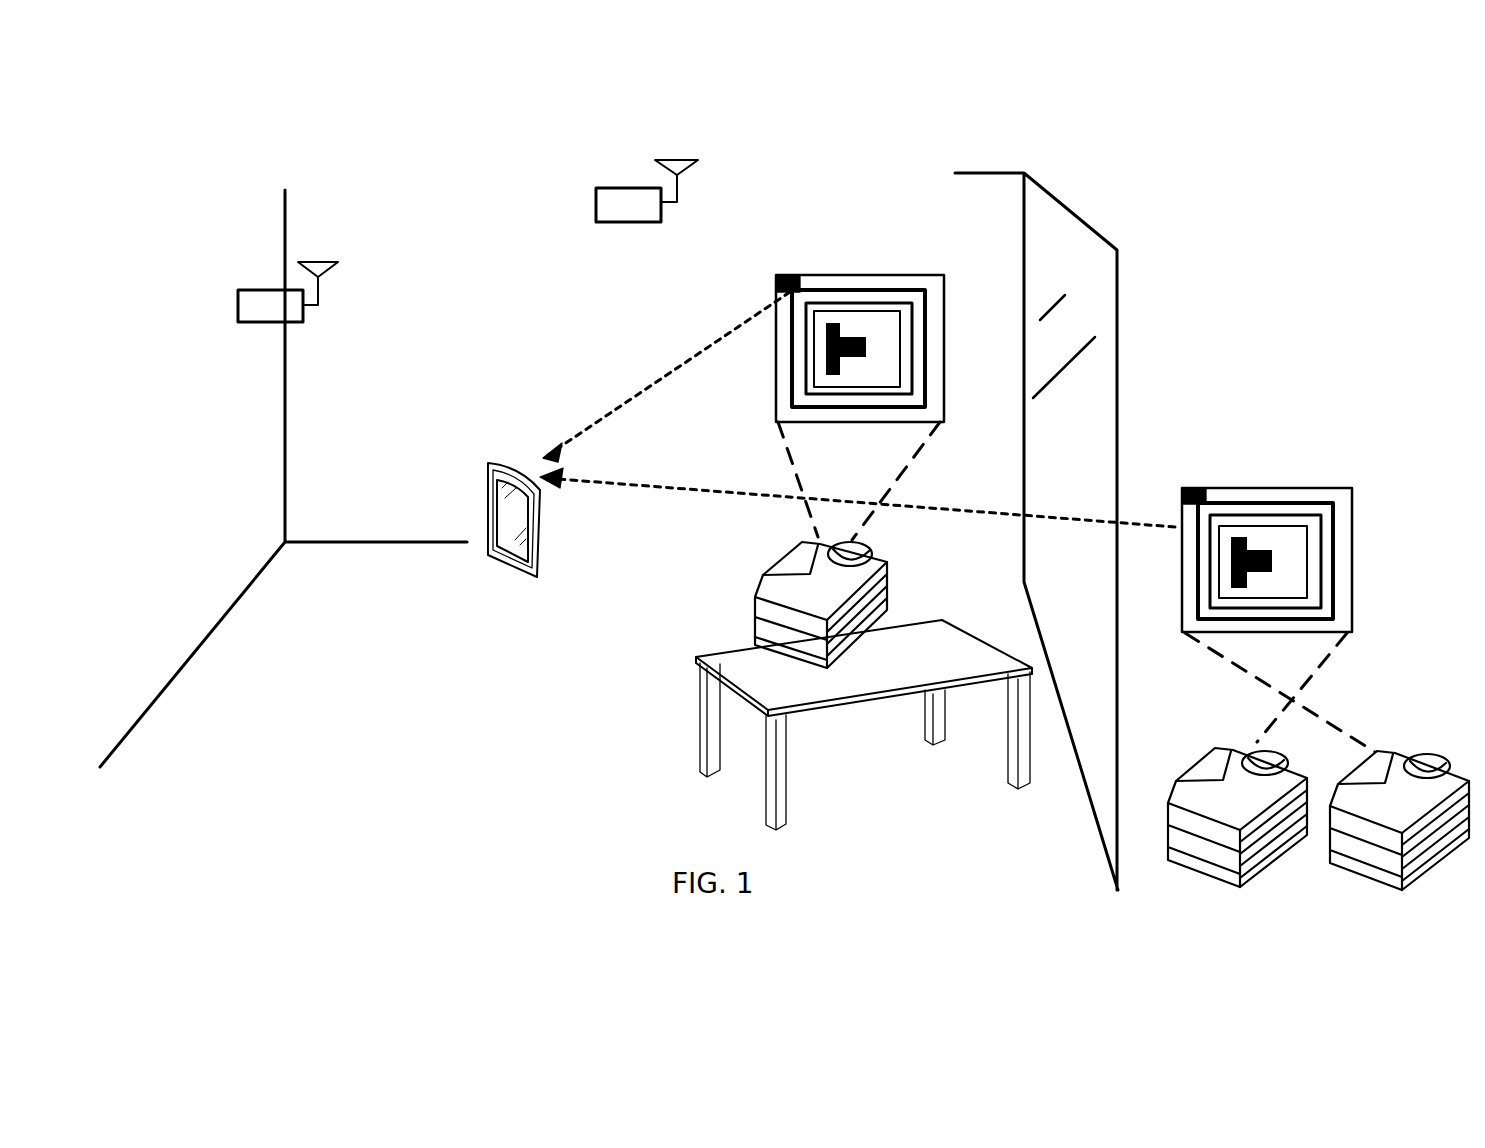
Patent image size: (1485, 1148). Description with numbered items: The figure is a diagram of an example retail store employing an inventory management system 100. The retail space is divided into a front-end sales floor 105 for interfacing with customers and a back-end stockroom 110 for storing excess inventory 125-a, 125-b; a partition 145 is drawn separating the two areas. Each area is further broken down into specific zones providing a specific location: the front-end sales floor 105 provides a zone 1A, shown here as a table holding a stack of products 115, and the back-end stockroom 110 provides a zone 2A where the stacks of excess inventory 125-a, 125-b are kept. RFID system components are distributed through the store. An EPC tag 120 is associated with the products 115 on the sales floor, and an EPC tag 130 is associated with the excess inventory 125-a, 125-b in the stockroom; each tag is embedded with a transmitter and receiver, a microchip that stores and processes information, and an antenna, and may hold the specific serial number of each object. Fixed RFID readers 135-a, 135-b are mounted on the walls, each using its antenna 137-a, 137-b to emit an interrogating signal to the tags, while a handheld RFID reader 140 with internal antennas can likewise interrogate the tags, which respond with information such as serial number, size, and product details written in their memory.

The inventory management system 100 is at (166, 108).
The sales floor 105 is at (520, 190).
The stockroom 110 is at (1262, 344).
The first item stack 115 is at (755, 597).
The EPC tag 120 is at (912, 275).
The excess inventory 125-a is at (1220, 763).
The excess inventory 125-b is at (1405, 748).
The EPC tag 130 is at (1317, 488).
The fixed RFID reader 135-a is at (270, 323).
The fixed RFID reader 135-b is at (630, 223).
The antenna 137-a is at (336, 268).
The antenna 137-b is at (694, 166).
The handheld RFID reader 140 is at (533, 580).
The glass wall / partition 145 is at (1045, 233).
The zone 1A is at (834, 694).
The zone 2A is at (1305, 892).